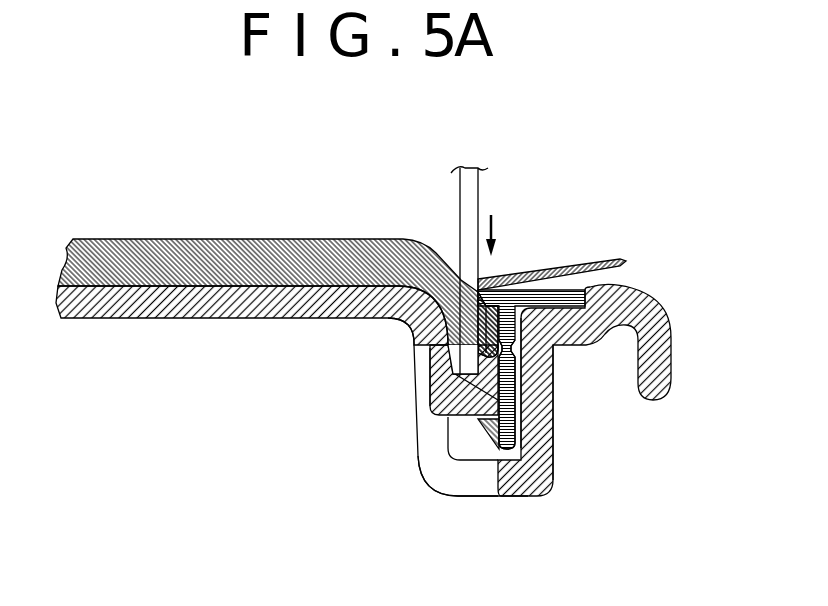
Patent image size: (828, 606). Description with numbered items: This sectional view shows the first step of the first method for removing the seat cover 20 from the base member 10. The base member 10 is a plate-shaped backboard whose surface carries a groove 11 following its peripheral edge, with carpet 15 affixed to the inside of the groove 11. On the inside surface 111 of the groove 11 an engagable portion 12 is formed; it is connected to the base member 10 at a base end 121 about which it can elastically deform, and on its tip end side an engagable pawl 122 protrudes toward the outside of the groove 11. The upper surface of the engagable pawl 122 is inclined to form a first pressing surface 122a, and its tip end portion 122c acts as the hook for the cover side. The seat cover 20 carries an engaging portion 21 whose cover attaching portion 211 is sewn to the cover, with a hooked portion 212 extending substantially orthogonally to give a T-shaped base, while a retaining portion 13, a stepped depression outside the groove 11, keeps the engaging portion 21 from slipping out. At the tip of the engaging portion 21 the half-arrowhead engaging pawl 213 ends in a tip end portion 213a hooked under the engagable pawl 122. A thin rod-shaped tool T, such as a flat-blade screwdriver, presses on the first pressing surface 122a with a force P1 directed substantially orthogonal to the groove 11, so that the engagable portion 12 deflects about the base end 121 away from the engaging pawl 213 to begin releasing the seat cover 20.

The base member 10 is at (254, 331).
The groove 11 is at (441, 452).
The inside surface 111 is at (452, 438).
The engagable portion 12 is at (415, 414).
The base end 121 is at (400, 317).
The engagable pawl 122 is at (426, 388).
The first pressing surface 122a is at (434, 242).
The tip end portion 122c is at (452, 438).
The retaining portion 13 is at (612, 266).
The carpet 15 is at (218, 232).
The seat cover 20 is at (535, 262).
The engaging portion 21 is at (513, 358).
The cover attaching portion 211 is at (512, 342).
The hooked portion 212 is at (565, 282).
The engaging pawl 213 is at (513, 407).
The tip end portion 213a is at (515, 387).
The tool T is at (472, 180).
The force P1 is at (502, 235).